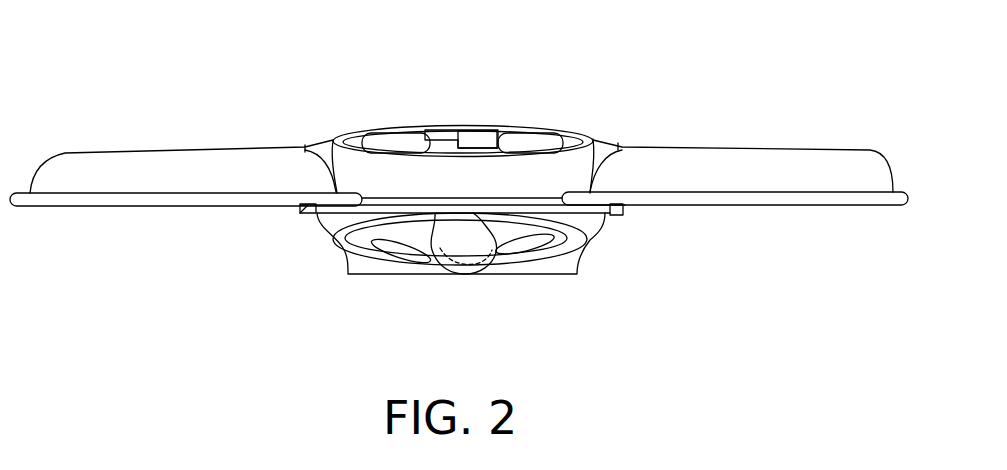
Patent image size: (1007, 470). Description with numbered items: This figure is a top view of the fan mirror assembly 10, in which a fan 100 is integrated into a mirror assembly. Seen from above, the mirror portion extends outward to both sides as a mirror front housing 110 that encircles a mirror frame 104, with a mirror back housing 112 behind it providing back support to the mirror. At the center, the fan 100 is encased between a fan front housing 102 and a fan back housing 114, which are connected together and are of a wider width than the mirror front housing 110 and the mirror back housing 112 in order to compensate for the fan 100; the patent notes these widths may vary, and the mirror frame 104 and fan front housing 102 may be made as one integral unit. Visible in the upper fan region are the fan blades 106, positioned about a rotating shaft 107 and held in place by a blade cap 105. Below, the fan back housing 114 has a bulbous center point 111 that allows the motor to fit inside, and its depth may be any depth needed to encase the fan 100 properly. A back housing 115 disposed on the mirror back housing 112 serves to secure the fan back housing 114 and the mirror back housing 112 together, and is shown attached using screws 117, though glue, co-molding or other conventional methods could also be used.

The fan mirror assembly 10 is at (78, 66).
The fan 100 is at (418, 273).
The fan front housing 102 is at (587, 158).
The mirror frame 104 is at (283, 143).
The blade cap 105 is at (477, 125).
The fan blades 106 is at (387, 130).
The rotating shaft 107 is at (455, 147).
The mirror front housing 110 is at (853, 175).
The bulbous center point 111 is at (470, 262).
The mirror back housing 112 is at (843, 195).
The fan back housing 114 is at (558, 228).
The back housing 115 is at (357, 258).
The screws 117 is at (300, 215).